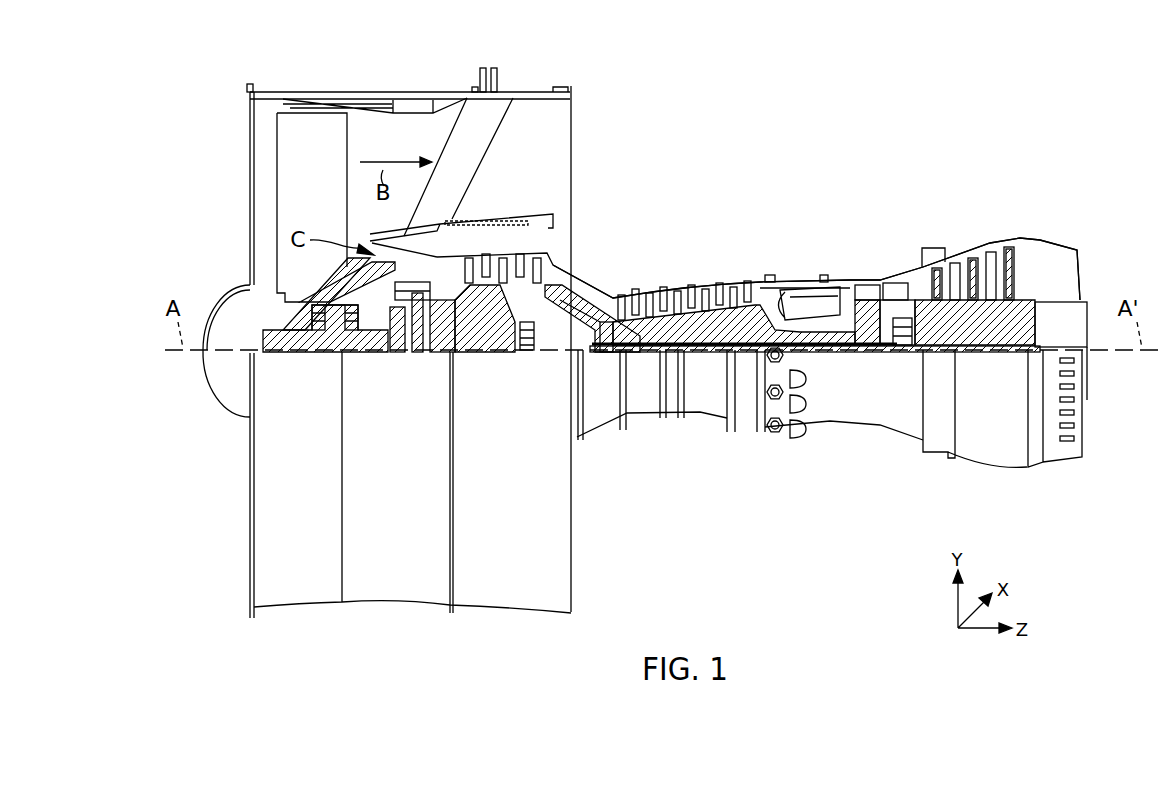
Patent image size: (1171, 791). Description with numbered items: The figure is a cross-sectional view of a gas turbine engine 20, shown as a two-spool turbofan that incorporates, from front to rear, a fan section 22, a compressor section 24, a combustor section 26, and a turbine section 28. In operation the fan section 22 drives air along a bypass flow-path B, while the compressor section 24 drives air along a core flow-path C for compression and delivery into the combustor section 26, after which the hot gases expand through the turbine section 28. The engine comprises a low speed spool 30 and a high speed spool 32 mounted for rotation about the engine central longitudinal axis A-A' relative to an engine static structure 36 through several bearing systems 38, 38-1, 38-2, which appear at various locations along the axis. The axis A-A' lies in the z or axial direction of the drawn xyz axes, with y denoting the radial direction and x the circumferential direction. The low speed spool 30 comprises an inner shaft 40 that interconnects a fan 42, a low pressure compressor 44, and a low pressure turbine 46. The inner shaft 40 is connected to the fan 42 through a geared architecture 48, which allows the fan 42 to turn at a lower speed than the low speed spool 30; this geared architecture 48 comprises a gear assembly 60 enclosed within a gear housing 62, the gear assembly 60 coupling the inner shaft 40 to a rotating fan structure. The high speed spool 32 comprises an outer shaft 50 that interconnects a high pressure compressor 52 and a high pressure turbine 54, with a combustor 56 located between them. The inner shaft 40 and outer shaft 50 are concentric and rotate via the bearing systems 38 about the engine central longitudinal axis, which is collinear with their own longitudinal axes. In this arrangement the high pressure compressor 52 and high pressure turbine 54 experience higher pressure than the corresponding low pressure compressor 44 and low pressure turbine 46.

The gas turbine engine 20 is at (853, 118).
The fan section 22 is at (447, 74).
The compressor section 24 is at (455, 184).
The combustor section 26 is at (760, 185).
The turbine section 28 is at (1033, 184).
The low speed spool 30 is at (712, 370).
The high speed spool 32 is at (744, 330).
The engine static structure 36 is at (876, 418).
The bearing system 38 is at (897, 352).
The bearing system 38-1 is at (320, 334).
The bearing system 38-2 is at (527, 342).
The inner shaft 40 is at (590, 354).
The fan 42 is at (415, 200).
The low pressure compressor 44 is at (528, 280).
The low pressure turbine 46 is at (975, 252).
The geared architecture 48 is at (418, 365).
The outer shaft 50 is at (812, 351).
The high pressure compressor 52 is at (695, 325).
The high pressure turbine 54 is at (860, 300).
The combustor 56 is at (805, 305).
The gear assembly 60 is at (445, 338).
The gear housing 62 is at (428, 304).